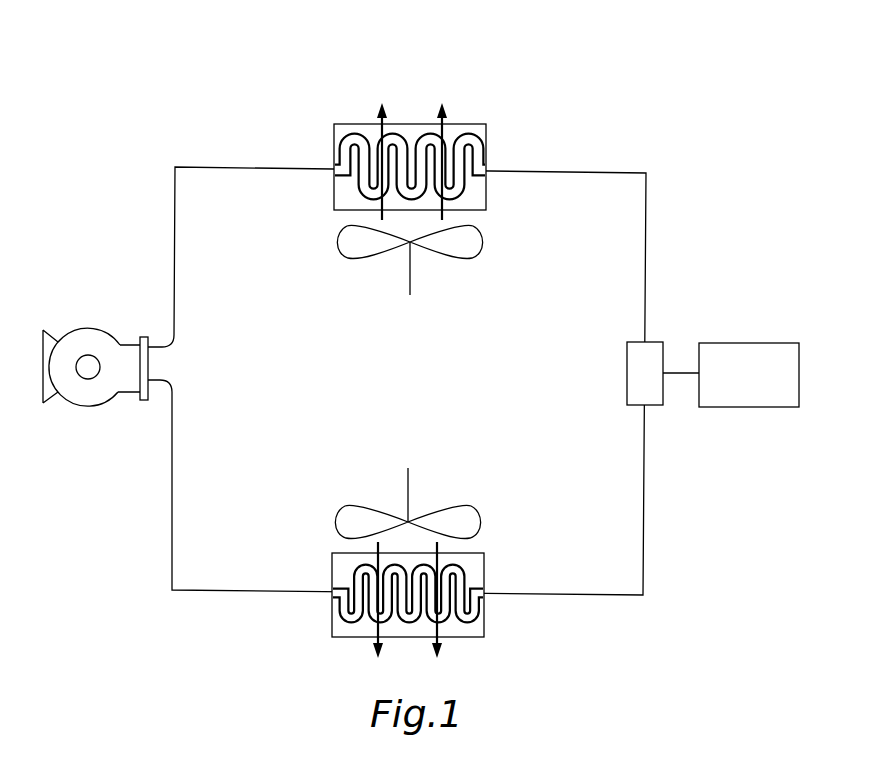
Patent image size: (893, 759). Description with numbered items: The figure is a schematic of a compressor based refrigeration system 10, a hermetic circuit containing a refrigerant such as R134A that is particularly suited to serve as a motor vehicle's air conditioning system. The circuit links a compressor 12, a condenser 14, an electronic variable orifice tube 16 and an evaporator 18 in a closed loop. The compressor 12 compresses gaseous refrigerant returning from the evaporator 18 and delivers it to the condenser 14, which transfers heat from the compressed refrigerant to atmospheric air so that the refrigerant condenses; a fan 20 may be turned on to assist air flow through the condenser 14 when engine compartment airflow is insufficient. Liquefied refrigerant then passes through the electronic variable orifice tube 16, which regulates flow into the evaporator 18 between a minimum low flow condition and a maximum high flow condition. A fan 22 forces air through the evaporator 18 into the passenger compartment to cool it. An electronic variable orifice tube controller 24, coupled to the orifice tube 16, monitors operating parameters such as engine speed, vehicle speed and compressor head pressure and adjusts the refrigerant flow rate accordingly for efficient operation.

The compressor based refrigeration system 10 is at (616, 106).
The compressor 12 is at (85, 330).
The condenser 14 is at (487, 140).
The electronic variable orifice tube 16 is at (663, 347).
The evaporator 18 is at (484, 614).
The fan 20 is at (462, 247).
The fan 22 is at (463, 519).
The electronic variable orifice tube controller 24 is at (752, 343).